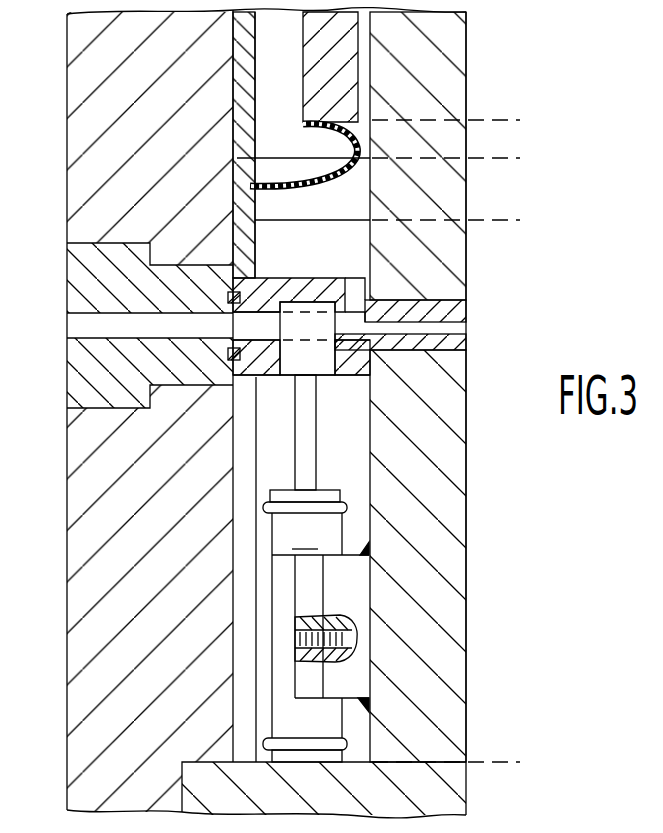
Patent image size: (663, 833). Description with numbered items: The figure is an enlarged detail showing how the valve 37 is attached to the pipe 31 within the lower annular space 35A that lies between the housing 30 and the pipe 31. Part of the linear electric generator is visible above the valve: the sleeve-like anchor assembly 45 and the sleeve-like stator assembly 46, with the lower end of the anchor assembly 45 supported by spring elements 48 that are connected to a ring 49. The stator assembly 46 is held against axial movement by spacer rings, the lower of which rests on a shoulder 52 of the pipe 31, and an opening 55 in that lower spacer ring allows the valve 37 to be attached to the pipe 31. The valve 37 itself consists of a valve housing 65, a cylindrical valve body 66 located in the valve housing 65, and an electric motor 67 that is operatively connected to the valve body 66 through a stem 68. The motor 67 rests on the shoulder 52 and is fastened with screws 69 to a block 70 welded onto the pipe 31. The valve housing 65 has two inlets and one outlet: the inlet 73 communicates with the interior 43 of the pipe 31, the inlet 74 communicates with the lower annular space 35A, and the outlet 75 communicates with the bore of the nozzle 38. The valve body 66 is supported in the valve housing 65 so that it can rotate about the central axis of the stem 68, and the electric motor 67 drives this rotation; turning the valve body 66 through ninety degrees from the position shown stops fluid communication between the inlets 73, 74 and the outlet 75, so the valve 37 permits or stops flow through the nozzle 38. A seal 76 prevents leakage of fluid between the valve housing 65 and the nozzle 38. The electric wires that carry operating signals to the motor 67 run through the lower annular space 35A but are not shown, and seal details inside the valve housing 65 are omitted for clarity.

The housing 30 is at (93, 212).
The pipe 31 is at (455, 190).
The lower annular space 35A is at (362, 240).
The valve 37 is at (268, 627).
The nozzle 38 is at (85, 367).
The interior of the pipe 43 is at (543, 496).
The anchor assembly 45 is at (318, 62).
The stator assembly 46 is at (240, 92).
The spring elements 48 is at (358, 140).
The ring 49 is at (245, 184).
The shoulder 52 is at (200, 765).
The opening 55 is at (248, 243).
The valve housing 65 is at (432, 340).
The cylindrical valve body 66 is at (322, 357).
The electric motor 67 is at (316, 626).
The stem 68 is at (307, 452).
The screws 69 is at (352, 660).
The block 70 is at (355, 590).
The inlet 73 is at (466, 328).
The inlet 74 is at (364, 288).
The outlet 75 is at (263, 330).
The seal 76 is at (228, 297).